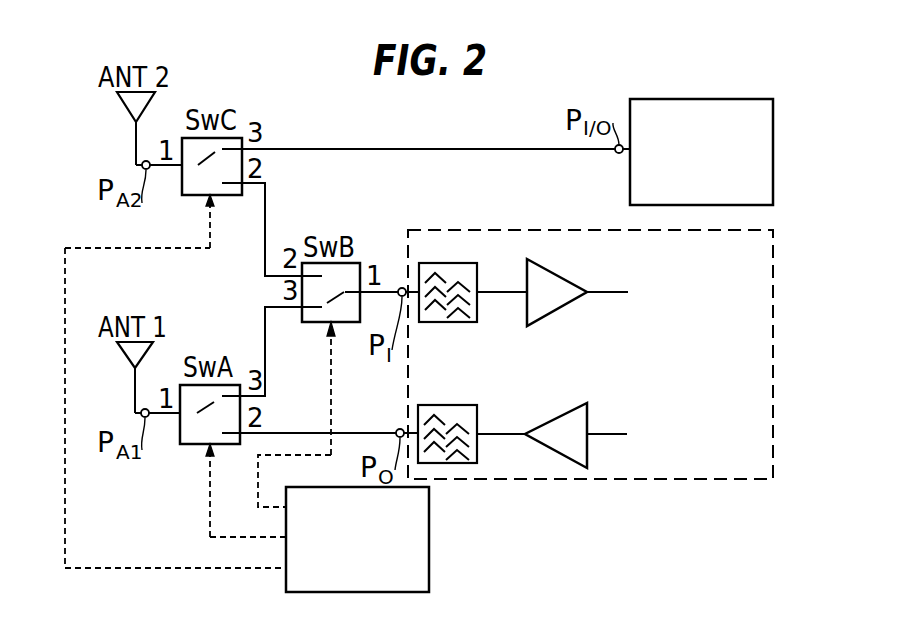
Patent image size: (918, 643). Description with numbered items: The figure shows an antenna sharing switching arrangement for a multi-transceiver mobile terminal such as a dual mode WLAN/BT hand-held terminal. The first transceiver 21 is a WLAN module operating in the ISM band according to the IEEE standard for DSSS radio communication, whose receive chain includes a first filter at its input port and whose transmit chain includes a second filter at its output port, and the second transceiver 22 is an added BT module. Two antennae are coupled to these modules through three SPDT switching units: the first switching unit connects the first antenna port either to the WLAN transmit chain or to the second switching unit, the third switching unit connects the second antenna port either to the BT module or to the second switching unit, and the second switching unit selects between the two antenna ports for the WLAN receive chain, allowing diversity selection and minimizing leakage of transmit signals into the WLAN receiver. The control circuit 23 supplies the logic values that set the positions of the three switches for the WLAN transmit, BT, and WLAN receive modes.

The first transceiver 21 is at (773, 253).
The second transceiver 22 is at (773, 126).
The control circuit 23 is at (429, 530).